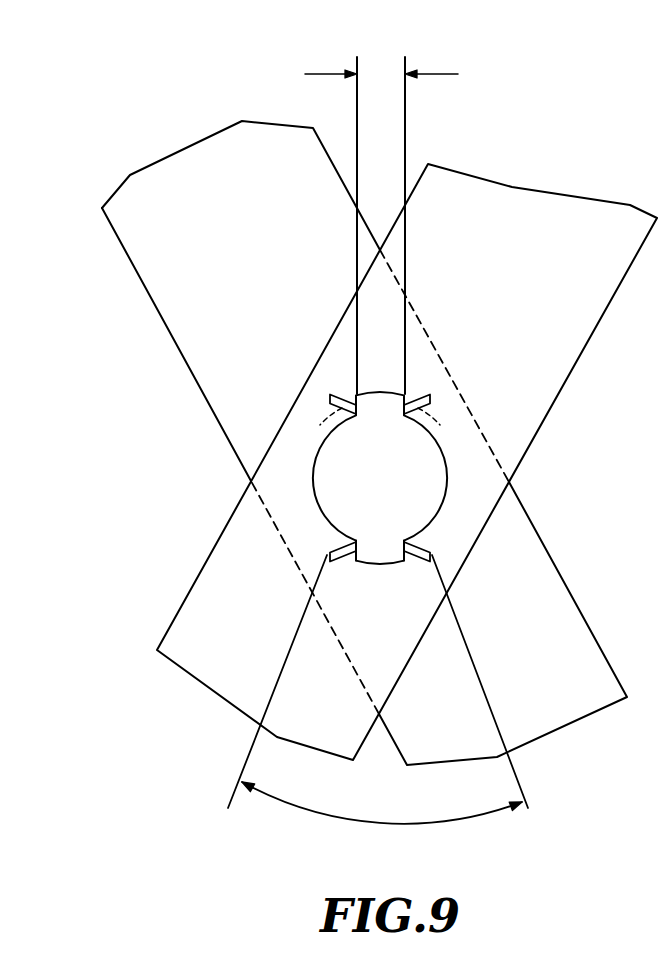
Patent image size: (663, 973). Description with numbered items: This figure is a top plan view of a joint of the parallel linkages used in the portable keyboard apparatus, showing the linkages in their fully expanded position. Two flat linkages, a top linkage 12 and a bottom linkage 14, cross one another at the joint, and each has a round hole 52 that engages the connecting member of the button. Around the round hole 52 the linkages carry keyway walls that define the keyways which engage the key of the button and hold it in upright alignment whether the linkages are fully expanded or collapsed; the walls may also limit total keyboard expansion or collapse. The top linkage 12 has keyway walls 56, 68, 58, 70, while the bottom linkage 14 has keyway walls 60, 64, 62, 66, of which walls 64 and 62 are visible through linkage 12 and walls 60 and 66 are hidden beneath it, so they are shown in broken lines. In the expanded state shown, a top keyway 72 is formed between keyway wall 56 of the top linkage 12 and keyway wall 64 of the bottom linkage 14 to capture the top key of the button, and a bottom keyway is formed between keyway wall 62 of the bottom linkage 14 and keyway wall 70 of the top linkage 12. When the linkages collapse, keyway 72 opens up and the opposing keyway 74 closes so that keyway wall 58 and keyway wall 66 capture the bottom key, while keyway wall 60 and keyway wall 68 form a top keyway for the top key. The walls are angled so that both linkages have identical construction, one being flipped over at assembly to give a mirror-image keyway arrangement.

The linkage 12 is at (568, 192).
The linkage 14 is at (108, 222).
The round hole 52 is at (433, 478).
The keyway wall 56 is at (355, 412).
The keyway wall 58 is at (330, 545).
The keyway wall 60 is at (330, 410).
The keyway wall 62 is at (357, 553).
The keyway wall 64 is at (407, 412).
The keyway wall 66 is at (425, 543).
The keyway wall 68 is at (425, 410).
The keyway wall 70 is at (405, 553).
The keyway 72 is at (447, 70).
The keyway 74 is at (402, 823).